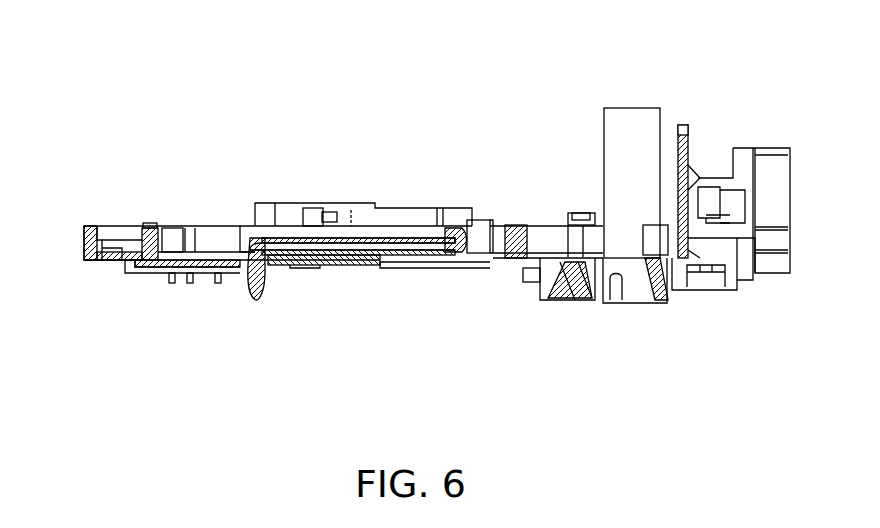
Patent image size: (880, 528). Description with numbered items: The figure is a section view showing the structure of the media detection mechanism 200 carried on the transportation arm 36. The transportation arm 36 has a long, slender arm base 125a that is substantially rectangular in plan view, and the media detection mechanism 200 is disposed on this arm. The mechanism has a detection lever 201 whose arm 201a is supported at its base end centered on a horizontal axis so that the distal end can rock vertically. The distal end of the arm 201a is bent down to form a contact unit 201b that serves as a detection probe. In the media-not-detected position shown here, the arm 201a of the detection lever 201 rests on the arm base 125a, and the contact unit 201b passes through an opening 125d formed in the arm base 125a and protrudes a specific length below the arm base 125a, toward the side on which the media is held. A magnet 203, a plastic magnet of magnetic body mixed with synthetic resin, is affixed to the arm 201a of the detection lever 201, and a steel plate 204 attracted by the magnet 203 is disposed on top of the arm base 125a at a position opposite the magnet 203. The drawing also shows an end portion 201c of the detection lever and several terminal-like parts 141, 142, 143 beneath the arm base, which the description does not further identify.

The transportation arm 36 is at (405, 103).
The media detection mechanism 200 is at (412, 212).
The detection lever 201 is at (342, 228).
The arm 201a is at (366, 262).
The contact unit 201b is at (262, 300).
The end portion of plate member 201c is at (470, 212).
The magnet 203 is at (290, 228).
The steel plate 204 is at (318, 265).
The arm base 125a is at (428, 268).
The opening 125d is at (240, 252).
The first terminal 141 is at (172, 284).
The second terminal 142 is at (190, 284).
The third terminal 143 is at (218, 284).